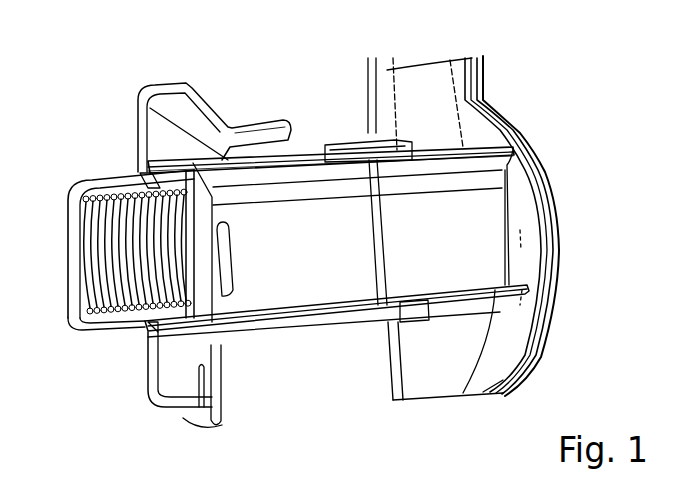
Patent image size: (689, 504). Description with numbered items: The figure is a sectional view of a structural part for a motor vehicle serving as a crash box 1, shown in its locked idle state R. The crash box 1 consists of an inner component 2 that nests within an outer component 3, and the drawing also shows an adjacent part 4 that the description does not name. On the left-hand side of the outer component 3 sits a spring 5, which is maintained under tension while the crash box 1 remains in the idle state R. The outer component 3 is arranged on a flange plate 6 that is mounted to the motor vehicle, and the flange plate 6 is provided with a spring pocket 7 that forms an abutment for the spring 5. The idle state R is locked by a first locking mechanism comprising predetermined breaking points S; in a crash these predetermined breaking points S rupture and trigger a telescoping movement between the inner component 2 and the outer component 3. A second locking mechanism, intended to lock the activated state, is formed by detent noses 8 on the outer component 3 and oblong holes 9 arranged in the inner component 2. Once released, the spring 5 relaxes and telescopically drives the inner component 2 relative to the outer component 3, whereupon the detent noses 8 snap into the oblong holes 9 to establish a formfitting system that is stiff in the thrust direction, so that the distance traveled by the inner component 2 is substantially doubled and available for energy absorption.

The crash box 1 is at (183, 62).
The inner component 2 is at (497, 145).
The outer component 3 is at (220, 160).
The vehicle body part 4 is at (420, 98).
The spring 5 is at (135, 263).
The flange plate 6 is at (147, 100).
The spring pocket 7 is at (72, 200).
The detent noses 8 is at (420, 325).
The oblong holes 9 is at (220, 263).
The predetermined breaking points S is at (142, 172).
The idle state R is at (338, 397).